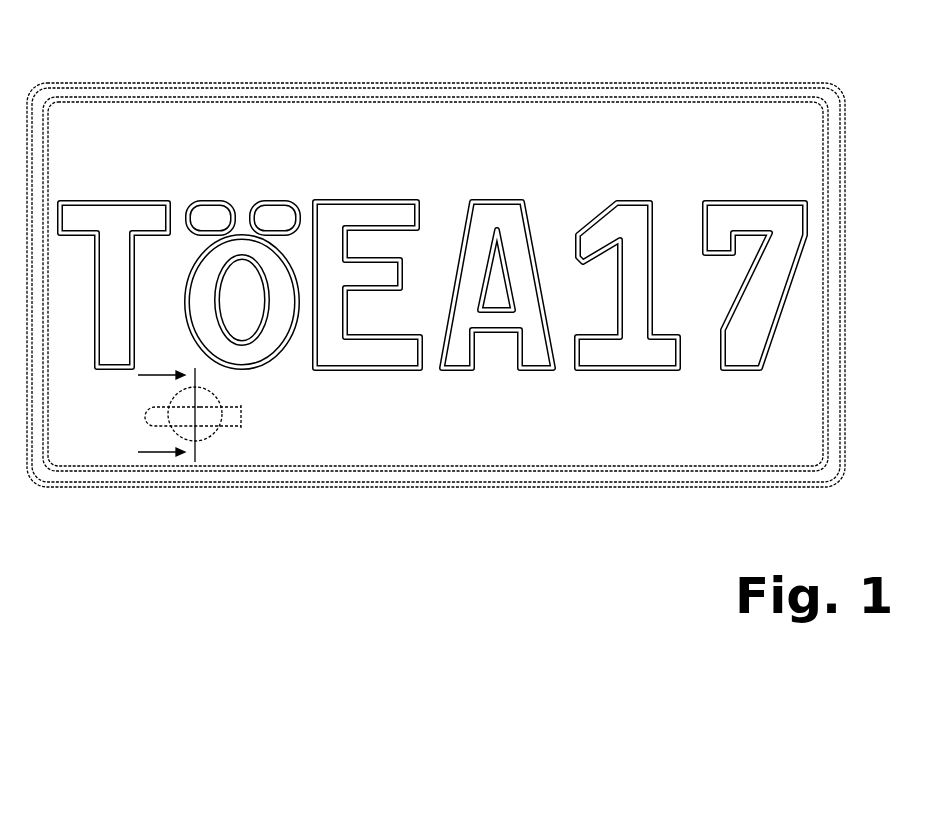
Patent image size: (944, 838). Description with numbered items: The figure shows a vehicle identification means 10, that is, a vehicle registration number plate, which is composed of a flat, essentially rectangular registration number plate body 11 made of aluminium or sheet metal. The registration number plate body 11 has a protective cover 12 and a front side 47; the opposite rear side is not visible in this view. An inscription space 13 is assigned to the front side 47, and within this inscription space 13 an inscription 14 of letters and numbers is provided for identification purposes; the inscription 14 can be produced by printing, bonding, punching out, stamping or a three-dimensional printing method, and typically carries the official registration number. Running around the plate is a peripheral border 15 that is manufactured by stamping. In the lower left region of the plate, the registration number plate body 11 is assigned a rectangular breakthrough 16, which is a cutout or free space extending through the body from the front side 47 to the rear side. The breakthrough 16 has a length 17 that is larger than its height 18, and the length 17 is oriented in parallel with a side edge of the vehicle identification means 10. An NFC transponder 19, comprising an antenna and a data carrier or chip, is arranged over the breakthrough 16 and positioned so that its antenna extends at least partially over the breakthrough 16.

The vehicle identification means 10 is at (614, 70).
The registration number plate body 11 is at (622, 447).
The protective cover 12 is at (282, 137).
The inscription space 13 is at (437, 365).
The inscription 14 is at (483, 215).
The peripheral border 15 is at (97, 98).
The breakthrough 16 is at (233, 418).
The length 17 is at (155, 427).
The height 18 is at (242, 417).
The NFC transponder 19 is at (203, 433).
The front side 47 is at (750, 438).